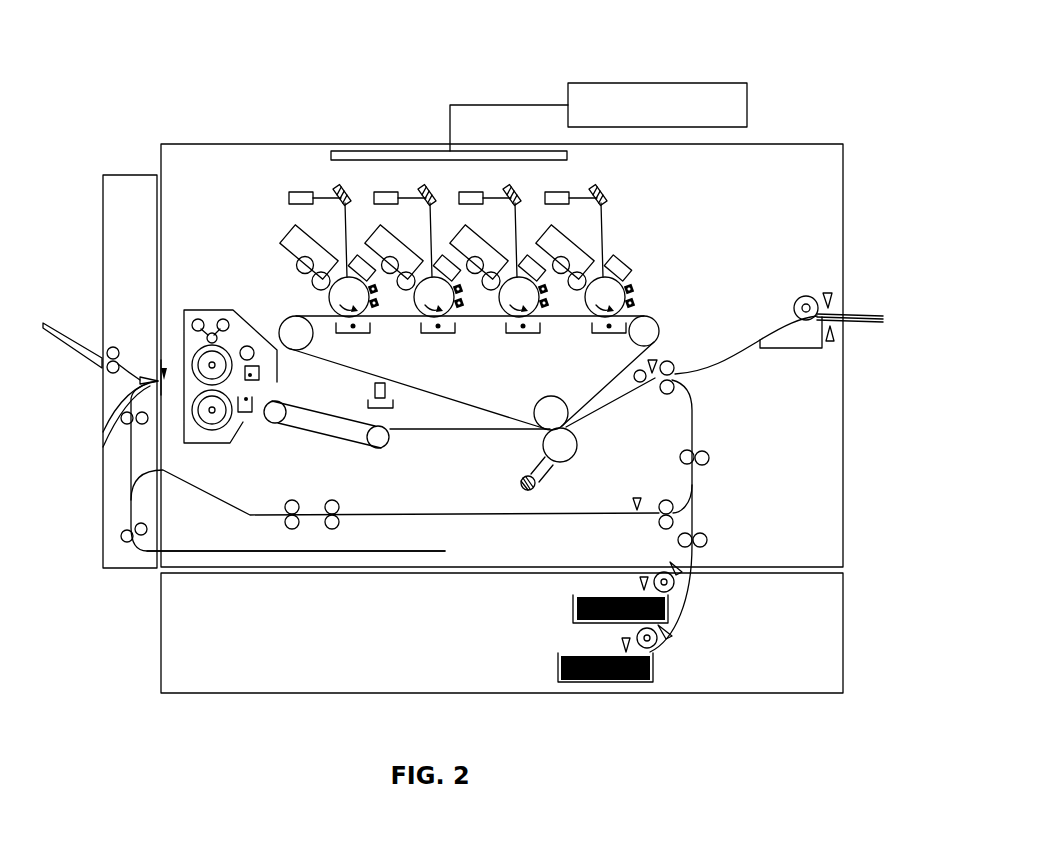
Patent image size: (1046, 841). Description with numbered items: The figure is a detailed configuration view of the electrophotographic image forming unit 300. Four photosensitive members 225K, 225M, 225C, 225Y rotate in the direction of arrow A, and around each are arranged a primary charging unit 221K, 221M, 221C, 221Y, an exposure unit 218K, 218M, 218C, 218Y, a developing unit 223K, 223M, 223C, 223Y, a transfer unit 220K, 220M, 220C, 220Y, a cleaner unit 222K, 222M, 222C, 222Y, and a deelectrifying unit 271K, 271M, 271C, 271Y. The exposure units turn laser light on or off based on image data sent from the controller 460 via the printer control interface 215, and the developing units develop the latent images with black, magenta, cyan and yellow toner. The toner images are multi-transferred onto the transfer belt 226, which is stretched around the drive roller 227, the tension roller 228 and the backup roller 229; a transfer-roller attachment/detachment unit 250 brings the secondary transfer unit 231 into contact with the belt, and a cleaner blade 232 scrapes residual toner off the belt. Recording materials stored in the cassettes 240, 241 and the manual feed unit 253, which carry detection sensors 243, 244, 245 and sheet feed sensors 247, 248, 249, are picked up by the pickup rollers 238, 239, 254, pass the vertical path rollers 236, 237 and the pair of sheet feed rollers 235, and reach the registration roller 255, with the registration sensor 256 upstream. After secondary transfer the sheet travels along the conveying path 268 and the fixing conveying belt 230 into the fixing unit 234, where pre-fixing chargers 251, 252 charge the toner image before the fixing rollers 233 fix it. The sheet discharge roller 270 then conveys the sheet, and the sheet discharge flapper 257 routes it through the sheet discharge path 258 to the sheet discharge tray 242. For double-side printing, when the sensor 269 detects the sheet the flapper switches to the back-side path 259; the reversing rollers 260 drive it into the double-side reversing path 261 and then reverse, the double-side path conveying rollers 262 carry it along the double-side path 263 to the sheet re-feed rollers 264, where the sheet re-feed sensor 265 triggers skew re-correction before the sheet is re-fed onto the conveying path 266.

The image forming unit 300 is at (784, 60).
The controller 460 is at (673, 81).
The printer control interface (I/F) 215 is at (395, 150).
The exposure unit 218K is at (298, 191).
The exposure unit 218M is at (386, 192).
The exposure unit 218C is at (472, 191).
The exposure unit 218Y is at (569, 191).
The primary charging unit 221K is at (340, 250).
The primary charging unit 221M is at (424, 252).
The primary charging unit 221C is at (509, 252).
The primary charging unit 221Y is at (614, 260).
The developing unit 223K is at (288, 238).
The developing unit 223M is at (372, 232).
The developing unit 223C is at (458, 232).
The developing unit 223Y is at (545, 232).
The photosensitive member 225K is at (328, 297).
The photosensitive member 225M is at (434, 320).
The photosensitive member 225C is at (522, 319).
The photosensitive member 225Y is at (628, 292).
The transfer unit 220K is at (350, 336).
The transfer unit 220M is at (437, 336).
The transfer unit 220C is at (522, 336).
The transfer unit 220Y is at (628, 323).
The cleaner unit 222K is at (375, 310).
The cleaner unit 222M is at (459, 310).
The cleaner unit 222C is at (545, 310).
The cleaner unit 222Y is at (637, 301).
The deelectrifying unit 271K is at (380, 300).
The deelectrifying unit 271M is at (465, 300).
The deelectrifying unit 271C is at (552, 300).
The deelectrifying unit 271Y is at (634, 287).
The transfer belt 226 is at (462, 428).
The drive roller 227 is at (290, 328).
The tension roller 228 is at (660, 333).
The backup roller 229 is at (568, 424).
The fixing conveying belt 230 is at (318, 425).
The secondary transfer unit 231 is at (577, 452).
The cleaner blade 232 is at (374, 390).
The fixing rollers 233 is at (219, 424).
The fixing unit 234 is at (203, 309).
The pair of sheet feed rollers 235 is at (677, 378).
The vertical path roller 236 is at (708, 461).
The vertical path roller 237 is at (706, 543).
The pickup roller 238 is at (676, 583).
The pickup roller 239 is at (659, 641).
The cassette 240 is at (572, 605).
The cassette 241 is at (558, 665).
The sheet discharge tray 242 is at (60, 325).
The detection sensor 243 is at (640, 583).
The detection sensor 244 is at (622, 643).
The detection sensor 245 is at (830, 343).
The sheet feed sensor 247 is at (674, 565).
The sheet feed sensor 248 is at (675, 630).
The sheet feed sensor 249 is at (826, 292).
The transfer-roller attachment/detachment unit 250 is at (520, 485).
The pre-fixing charger 251 is at (260, 378).
The pre-fixing charger 252 is at (247, 413).
The manual feed unit 253 is at (852, 322).
The pickup roller 254 is at (795, 302).
The registration roller 255 is at (639, 384).
The registration sensor 256 is at (660, 364).
The sheet discharge flapper 257 is at (135, 386).
The sheet discharge path 258 is at (148, 372).
The back-side path 259 is at (136, 412).
The reversing rollers 260 is at (124, 530).
The double-side reversing path 261 is at (282, 553).
The double-side path conveying rollers 262 is at (300, 527).
The double-side path 263 is at (450, 516).
The sheet re-feed rollers 264 is at (659, 520).
The sheet re-feed sensor 265 is at (633, 503).
The conveying path 266 is at (694, 415).
The conveying path 268 is at (437, 430).
The sensor 269 is at (164, 358).
The sheet discharge roller 270 is at (105, 373).